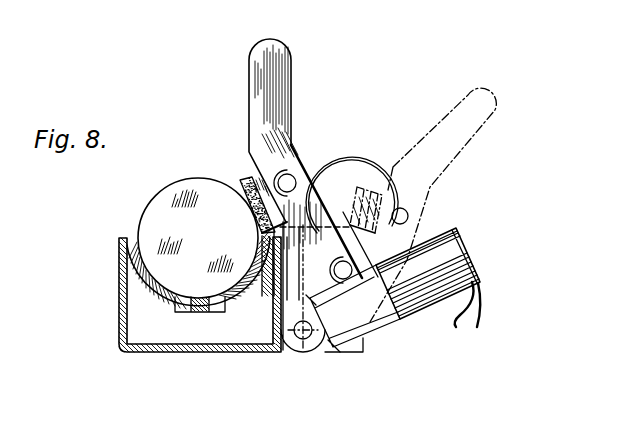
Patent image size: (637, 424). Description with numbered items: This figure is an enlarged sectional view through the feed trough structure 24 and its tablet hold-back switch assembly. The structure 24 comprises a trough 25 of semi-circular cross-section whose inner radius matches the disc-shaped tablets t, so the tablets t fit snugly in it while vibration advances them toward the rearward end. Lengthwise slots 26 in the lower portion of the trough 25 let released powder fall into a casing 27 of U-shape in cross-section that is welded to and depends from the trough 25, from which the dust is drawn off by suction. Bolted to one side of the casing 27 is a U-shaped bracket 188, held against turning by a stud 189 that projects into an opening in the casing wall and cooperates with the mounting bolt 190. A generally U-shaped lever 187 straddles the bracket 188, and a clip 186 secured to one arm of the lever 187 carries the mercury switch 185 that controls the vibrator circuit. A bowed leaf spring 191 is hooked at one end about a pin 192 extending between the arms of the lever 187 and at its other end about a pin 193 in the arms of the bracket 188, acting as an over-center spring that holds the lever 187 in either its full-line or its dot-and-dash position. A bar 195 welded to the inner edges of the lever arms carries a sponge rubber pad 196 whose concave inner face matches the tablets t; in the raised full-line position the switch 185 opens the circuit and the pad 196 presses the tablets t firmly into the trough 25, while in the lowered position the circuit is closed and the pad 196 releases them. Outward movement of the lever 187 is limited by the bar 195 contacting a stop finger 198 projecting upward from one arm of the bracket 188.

The tablets t is at (165, 197).
The feed trough structure 24 is at (118, 246).
The trough 25 is at (142, 273).
The lengthwise slots 26 is at (213, 308).
The casing 27 is at (121, 340).
The mercury switch 185 is at (463, 245).
The clip 186 is at (378, 335).
The lever 187 is at (286, 155).
The U-shaped bracket 188 is at (360, 198).
The stud 189 is at (262, 235).
The mounting bolt 190 is at (283, 326).
The bowed leaf spring 191 is at (348, 158).
The pin 192 is at (293, 176).
The pin 193 is at (343, 262).
The bar 195 is at (257, 177).
The pad 196 is at (247, 183).
The stop finger 198 is at (413, 228).